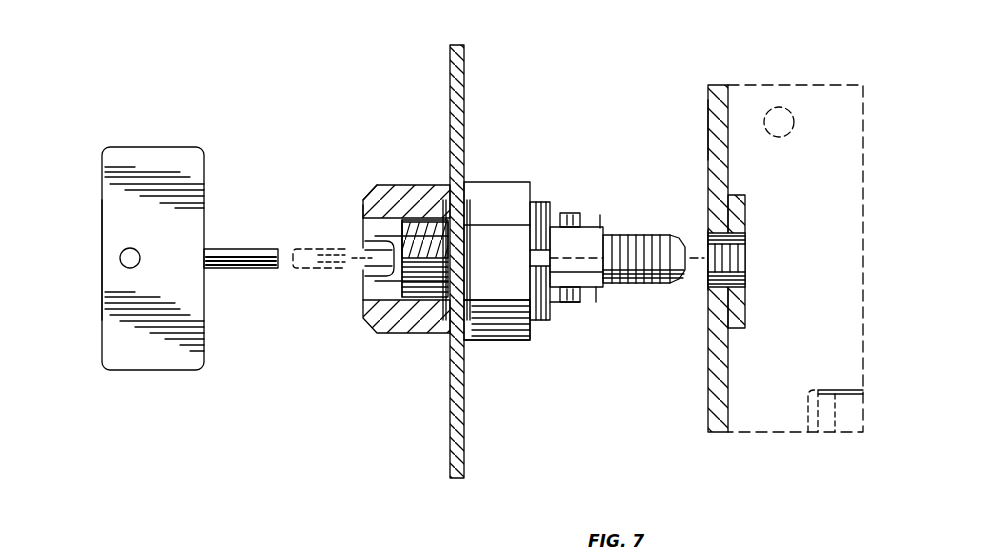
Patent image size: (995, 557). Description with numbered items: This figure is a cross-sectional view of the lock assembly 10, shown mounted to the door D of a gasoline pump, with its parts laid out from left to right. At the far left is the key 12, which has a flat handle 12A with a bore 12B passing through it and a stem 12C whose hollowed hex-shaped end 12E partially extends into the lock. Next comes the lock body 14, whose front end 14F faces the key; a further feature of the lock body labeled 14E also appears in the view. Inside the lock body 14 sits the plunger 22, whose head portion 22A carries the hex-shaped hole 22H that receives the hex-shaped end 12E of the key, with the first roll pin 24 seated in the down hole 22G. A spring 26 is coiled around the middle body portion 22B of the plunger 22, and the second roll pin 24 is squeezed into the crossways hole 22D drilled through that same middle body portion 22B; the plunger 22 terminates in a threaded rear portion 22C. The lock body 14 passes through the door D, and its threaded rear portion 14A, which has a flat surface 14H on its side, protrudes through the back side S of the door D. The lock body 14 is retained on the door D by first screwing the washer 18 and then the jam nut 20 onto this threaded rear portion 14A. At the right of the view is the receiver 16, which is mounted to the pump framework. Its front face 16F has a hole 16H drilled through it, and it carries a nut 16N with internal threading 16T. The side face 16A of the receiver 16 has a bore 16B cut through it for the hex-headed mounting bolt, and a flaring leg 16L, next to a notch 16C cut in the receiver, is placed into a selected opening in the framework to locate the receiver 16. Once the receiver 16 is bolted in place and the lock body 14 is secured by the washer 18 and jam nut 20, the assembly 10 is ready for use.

The lock assembly 10 is at (269, 100).
The key 12 is at (150, 145).
The flat handle 12A is at (110, 225).
The bore 12B is at (127, 266).
The stem 12C is at (250, 248).
The hollowed hex-shaped end 12E is at (328, 248).
The lock body 14 is at (390, 178).
The threaded rear portion 14A is at (467, 248).
The housing end 14E is at (560, 310).
The front end 14F is at (357, 197).
The flat surface 14H is at (530, 200).
The receiver 16 is at (712, 75).
The side face 16A is at (745, 85).
The bore 16B is at (783, 108).
The notch 16C is at (812, 432).
The front face 16F is at (708, 130).
The hole 16H is at (708, 245).
The leg 16L is at (838, 432).
The nut 16N is at (745, 195).
The internal threading 16T is at (745, 258).
The washer 18 is at (463, 180).
The jam nut 20 is at (490, 332).
The plunger 22 is at (375, 318).
The head portion 22A is at (370, 290).
The middle body portion 22B is at (440, 335).
The threaded rear portion 22C is at (672, 290).
The crossways hole 22D is at (585, 246).
The down hole 22G is at (400, 300).
The hex-shaped hole 22H is at (363, 262).
The roll pin 24 is at (363, 218).
The spring 26 is at (413, 185).
The door D is at (447, 98).
The back side S is at (464, 100).